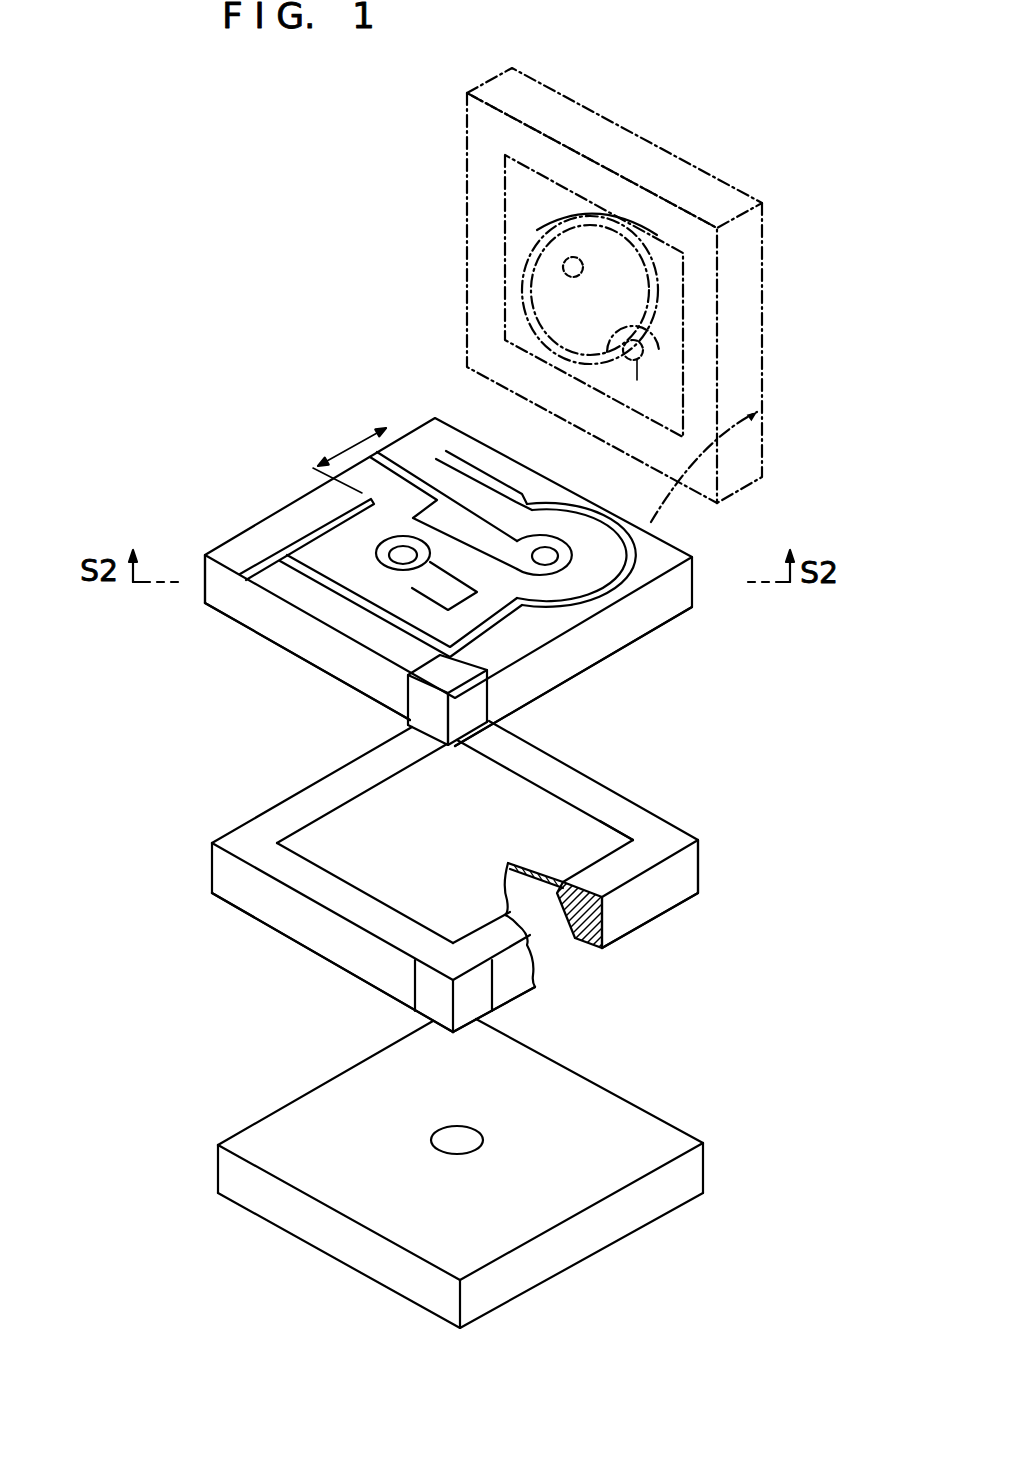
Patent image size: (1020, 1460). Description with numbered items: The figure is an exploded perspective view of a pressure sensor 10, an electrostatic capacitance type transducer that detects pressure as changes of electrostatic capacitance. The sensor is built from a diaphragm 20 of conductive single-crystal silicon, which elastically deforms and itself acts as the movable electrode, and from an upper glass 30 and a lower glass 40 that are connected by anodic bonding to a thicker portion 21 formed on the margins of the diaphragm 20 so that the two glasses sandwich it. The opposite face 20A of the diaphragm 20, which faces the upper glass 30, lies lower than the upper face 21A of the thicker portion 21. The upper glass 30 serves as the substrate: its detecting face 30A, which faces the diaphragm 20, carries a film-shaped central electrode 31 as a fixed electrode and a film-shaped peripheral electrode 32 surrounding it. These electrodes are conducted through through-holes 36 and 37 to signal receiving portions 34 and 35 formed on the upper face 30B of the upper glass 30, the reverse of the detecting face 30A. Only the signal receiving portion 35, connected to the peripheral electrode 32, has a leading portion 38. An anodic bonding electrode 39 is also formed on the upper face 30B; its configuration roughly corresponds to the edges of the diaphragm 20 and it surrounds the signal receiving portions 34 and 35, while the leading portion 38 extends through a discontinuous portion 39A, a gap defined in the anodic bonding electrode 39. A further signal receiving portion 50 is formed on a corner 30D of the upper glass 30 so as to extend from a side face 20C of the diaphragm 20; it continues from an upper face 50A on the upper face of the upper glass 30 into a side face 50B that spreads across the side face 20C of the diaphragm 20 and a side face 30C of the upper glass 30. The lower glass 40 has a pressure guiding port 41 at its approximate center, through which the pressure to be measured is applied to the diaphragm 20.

The pressure sensor 10 is at (245, 226).
The diaphragm 20 is at (595, 813).
The opposite face 20A is at (510, 810).
The side face 20C is at (373, 967).
The thicker portion 21 is at (688, 877).
The upper face 21A is at (657, 832).
The upper glass 30 is at (658, 610).
The detecting face 30A is at (485, 266).
The upper face 30B is at (265, 540).
The side face 30C is at (597, 642).
The corner 30D is at (447, 693).
The central electrode 31 is at (558, 244).
The peripheral electrode 32 is at (522, 290).
The signal receiving portion 34 is at (433, 588).
The signal receiving portion 35 is at (495, 538).
The through-hole 36 is at (222, 635).
The through-hole 37 is at (637, 380).
The leading portion 38 is at (407, 478).
The anodic bonding electrode 39 is at (323, 527).
The discontinuous portion 39A is at (352, 447).
The lower glass 40 is at (693, 1173).
The pressure guiding port 41 is at (457, 1127).
The signal receiving portion 50 is at (222, 718).
The upper face 50A is at (432, 658).
The side face 50B is at (413, 707).